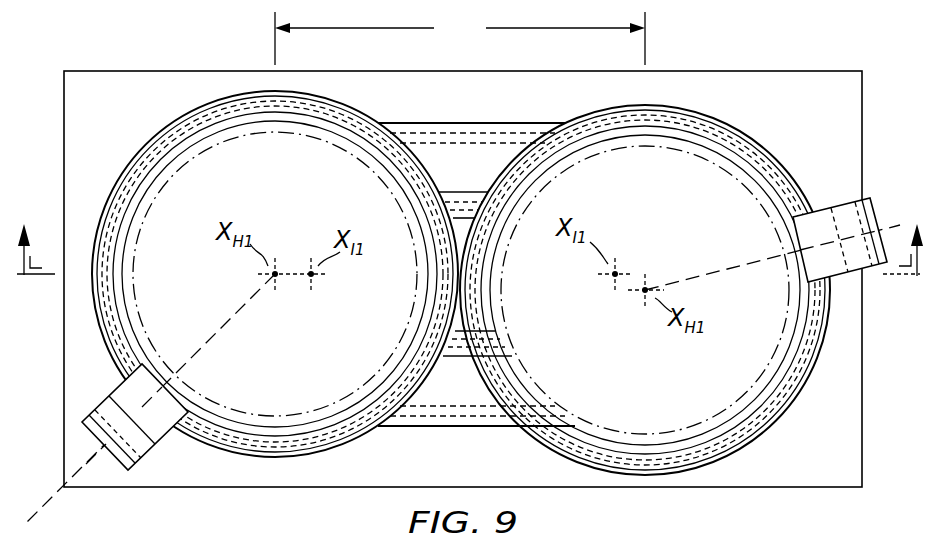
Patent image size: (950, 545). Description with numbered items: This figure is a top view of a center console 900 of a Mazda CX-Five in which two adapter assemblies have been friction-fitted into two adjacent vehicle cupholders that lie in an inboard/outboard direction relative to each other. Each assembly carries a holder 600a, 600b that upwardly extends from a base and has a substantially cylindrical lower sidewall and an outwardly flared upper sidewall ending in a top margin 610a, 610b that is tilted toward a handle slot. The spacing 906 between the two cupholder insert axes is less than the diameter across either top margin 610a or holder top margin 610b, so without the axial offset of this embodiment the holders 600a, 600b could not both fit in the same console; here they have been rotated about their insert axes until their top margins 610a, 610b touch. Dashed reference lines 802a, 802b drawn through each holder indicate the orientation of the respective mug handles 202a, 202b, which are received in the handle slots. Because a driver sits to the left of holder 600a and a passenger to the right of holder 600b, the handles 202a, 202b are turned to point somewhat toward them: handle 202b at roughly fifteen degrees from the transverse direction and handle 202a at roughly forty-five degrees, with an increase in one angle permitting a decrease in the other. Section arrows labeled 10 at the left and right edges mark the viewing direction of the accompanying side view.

The center console 900 is at (862, 450).
The spacing 906 is at (460, 38).
The holder 600a is at (204, 104).
The second holder 600b is at (754, 104).
The top margin 610a is at (142, 152).
The holder top margin 610b is at (775, 151).
The left eyecup movement axis 802a is at (246, 308).
The right eyecup movement axis 802b is at (733, 268).
The handle 202a is at (103, 393).
The handle 202b is at (842, 280).
The view direction for FIG. 10 is at (472, 237).